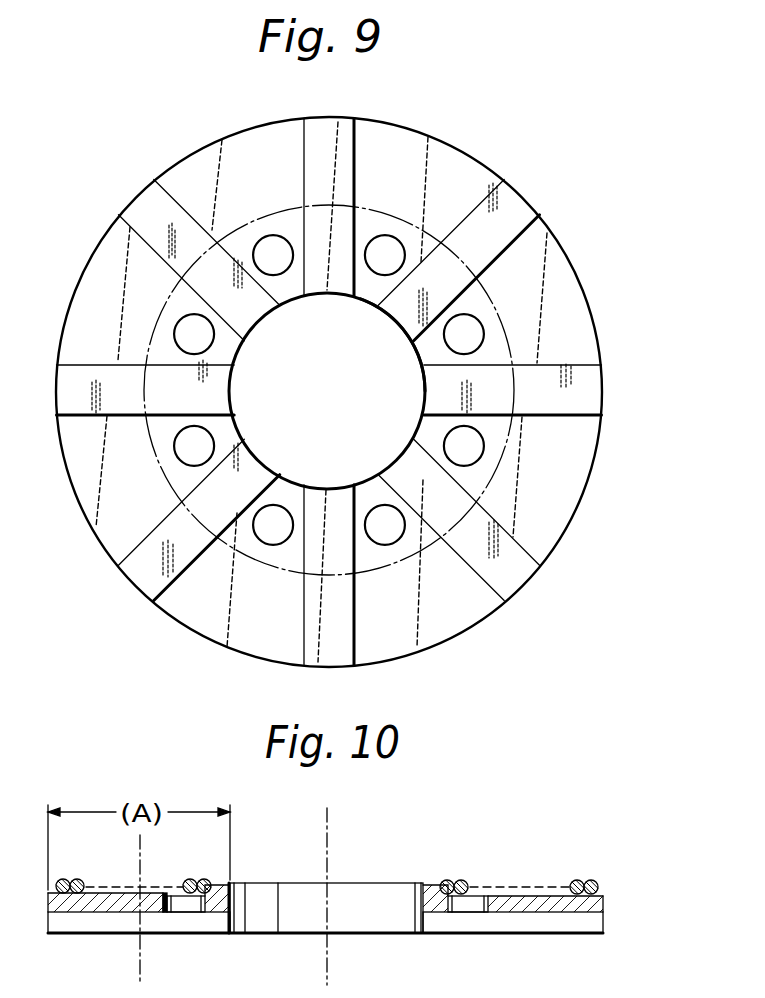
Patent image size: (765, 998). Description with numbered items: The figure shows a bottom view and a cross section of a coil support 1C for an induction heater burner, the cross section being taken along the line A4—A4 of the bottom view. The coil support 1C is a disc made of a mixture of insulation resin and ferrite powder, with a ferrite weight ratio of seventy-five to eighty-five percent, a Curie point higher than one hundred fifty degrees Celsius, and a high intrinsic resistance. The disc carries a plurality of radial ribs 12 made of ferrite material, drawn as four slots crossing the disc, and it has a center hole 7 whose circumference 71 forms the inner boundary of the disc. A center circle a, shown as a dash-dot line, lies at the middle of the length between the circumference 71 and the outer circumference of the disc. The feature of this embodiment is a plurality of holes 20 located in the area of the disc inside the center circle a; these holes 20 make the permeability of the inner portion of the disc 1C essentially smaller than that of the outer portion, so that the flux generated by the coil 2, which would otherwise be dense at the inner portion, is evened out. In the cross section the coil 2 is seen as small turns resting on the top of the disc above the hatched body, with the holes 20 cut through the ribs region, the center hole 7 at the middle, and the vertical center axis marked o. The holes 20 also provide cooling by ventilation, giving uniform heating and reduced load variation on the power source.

In FIG. 9, the coil support 1C is at (601, 335).
In FIG. 10, the coil support 1C is at (604, 905).
In FIG. 9, the radial ribs 12 is at (353, 157).
In FIG. 10, the radial ribs 12 is at (85, 928).
In FIG. 9, the holes 20 is at (265, 243).
In FIG. 10, the holes 20 is at (188, 906).
In FIG. 9, the center hole 7 is at (346, 374).
In FIG. 10, the center hole 7 is at (376, 900).
In FIG. 9, the circumference of the center hole 71 is at (417, 342).
In FIG. 10, the circumference of the center hole 71 is at (230, 897).
In FIG. 10, the coil 2 is at (591, 880).
In FIG. 9, the center circle a is at (437, 207).
In FIG. 10, the center circle a is at (138, 971).
In FIG. 9, the section line A4- A4 is at (622, 257).
In FIG. 10, the center axis o is at (330, 967).